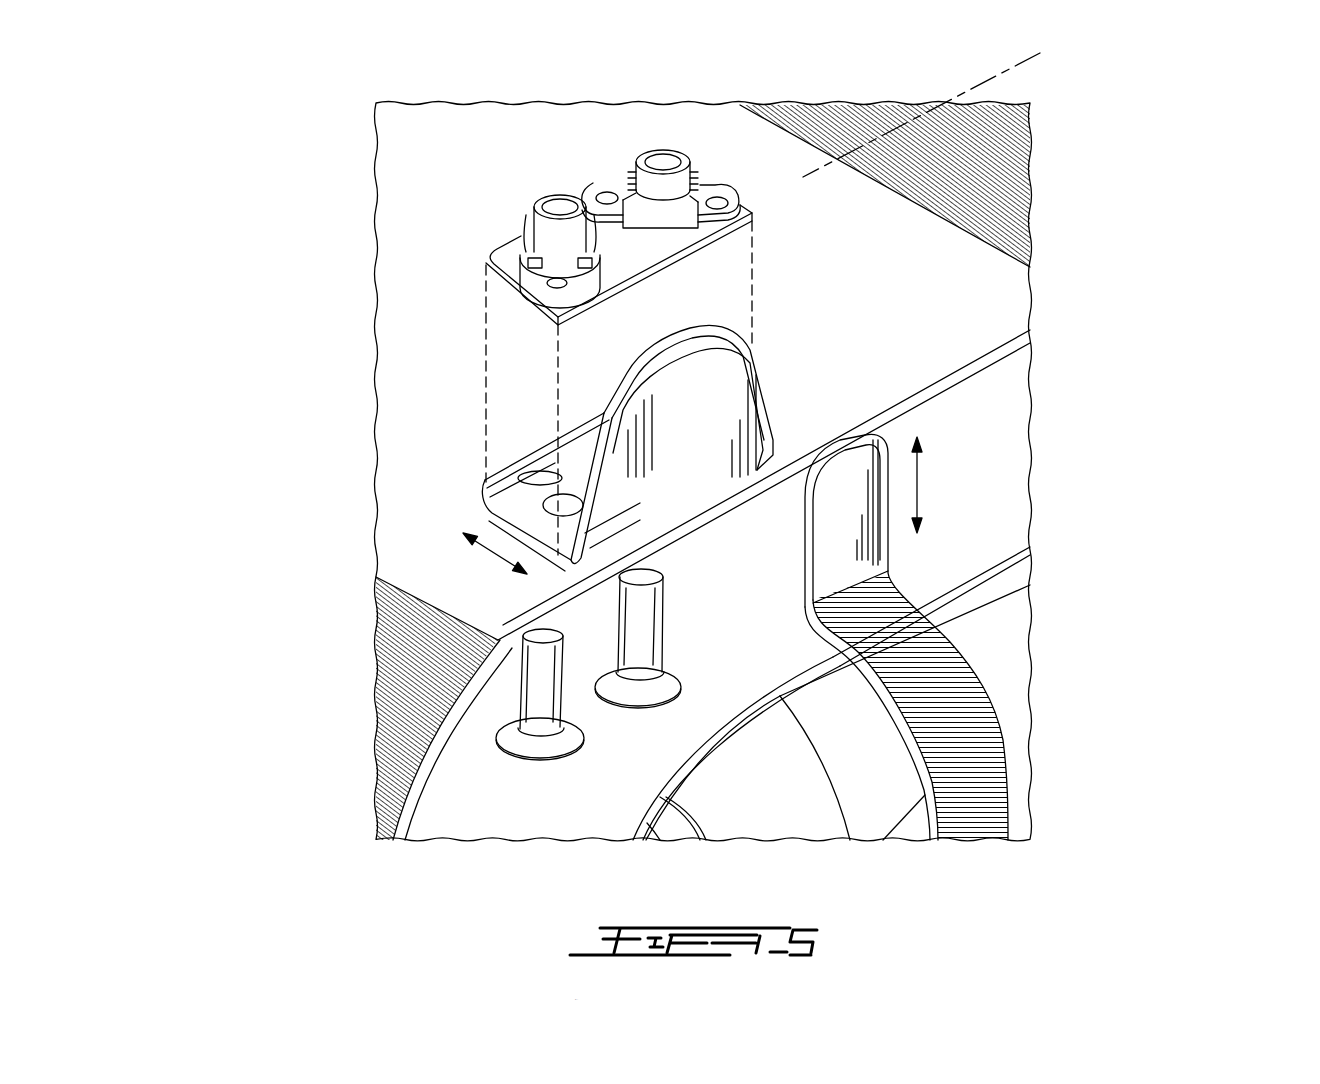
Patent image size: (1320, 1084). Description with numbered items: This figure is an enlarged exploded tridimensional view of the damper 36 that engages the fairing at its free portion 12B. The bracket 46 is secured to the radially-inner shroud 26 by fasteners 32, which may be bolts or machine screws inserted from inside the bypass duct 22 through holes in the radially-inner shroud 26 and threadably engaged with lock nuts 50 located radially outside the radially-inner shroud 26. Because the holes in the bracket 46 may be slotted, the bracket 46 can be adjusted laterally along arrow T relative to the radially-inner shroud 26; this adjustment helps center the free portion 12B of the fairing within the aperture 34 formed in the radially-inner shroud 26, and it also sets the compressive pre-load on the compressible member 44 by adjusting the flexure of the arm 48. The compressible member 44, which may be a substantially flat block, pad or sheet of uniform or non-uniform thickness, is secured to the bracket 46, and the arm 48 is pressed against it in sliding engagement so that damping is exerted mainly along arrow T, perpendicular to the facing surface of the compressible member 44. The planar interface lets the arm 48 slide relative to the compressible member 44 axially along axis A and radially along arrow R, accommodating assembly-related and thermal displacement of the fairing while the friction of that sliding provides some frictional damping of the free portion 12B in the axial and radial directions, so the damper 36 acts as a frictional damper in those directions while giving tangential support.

The free portion of fairing 12B is at (1066, 690).
The bypass duct 22 is at (759, 649).
The radially-inner shroud 26 is at (901, 238).
The fasteners 32 is at (647, 642).
The aperture 34 is at (460, 808).
The damper 36 is at (266, 322).
The compressible member 44 is at (715, 405).
The bracket 46 is at (572, 453).
The arm 48 is at (852, 542).
The nuts 50 is at (557, 203).
The axis A is at (1045, 58).
The radial direction R is at (917, 487).
The tangential direction T is at (490, 556).